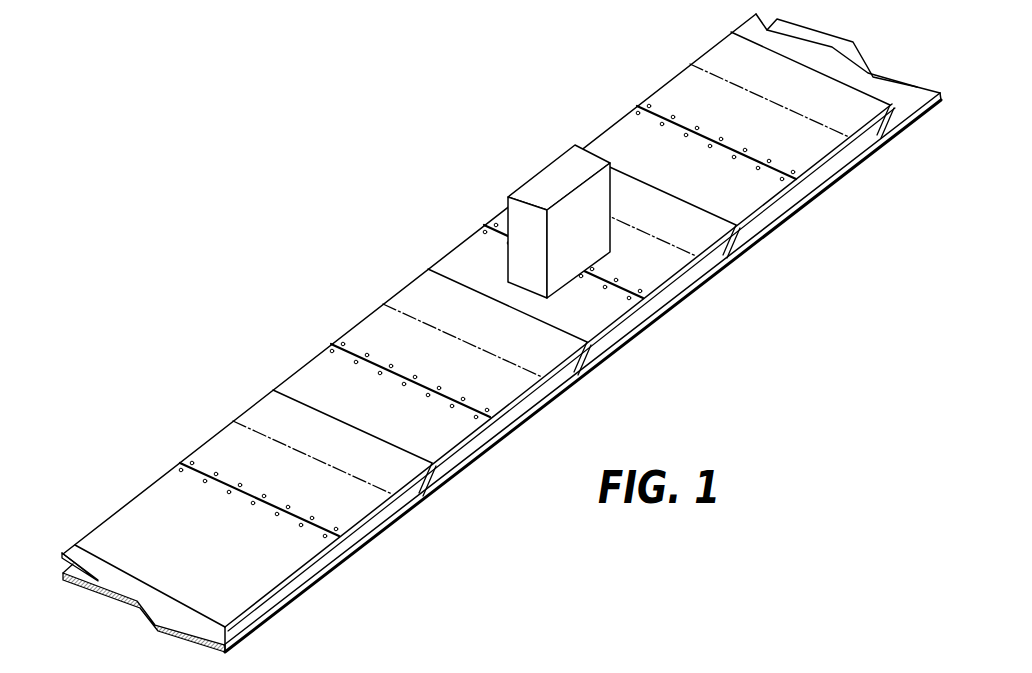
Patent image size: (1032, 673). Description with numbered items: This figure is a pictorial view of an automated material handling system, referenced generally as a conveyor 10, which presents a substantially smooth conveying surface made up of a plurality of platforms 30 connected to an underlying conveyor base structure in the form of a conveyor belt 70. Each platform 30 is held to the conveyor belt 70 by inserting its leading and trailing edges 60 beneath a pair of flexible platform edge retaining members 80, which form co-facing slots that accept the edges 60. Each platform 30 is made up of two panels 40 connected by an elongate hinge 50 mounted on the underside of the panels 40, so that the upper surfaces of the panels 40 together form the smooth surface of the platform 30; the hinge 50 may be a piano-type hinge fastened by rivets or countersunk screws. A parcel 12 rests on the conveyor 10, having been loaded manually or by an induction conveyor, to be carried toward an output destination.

The conveyor 10 is at (386, 213).
The parcel 12 is at (557, 177).
The platform 30 is at (613, 123).
The panel 40 is at (524, 396).
The elongate hinge 50 is at (776, 196).
The leading and trailing edges 60 is at (510, 388).
The conveyor belt 70 is at (354, 545).
The flexible platform edge retaining members 80 is at (712, 44).